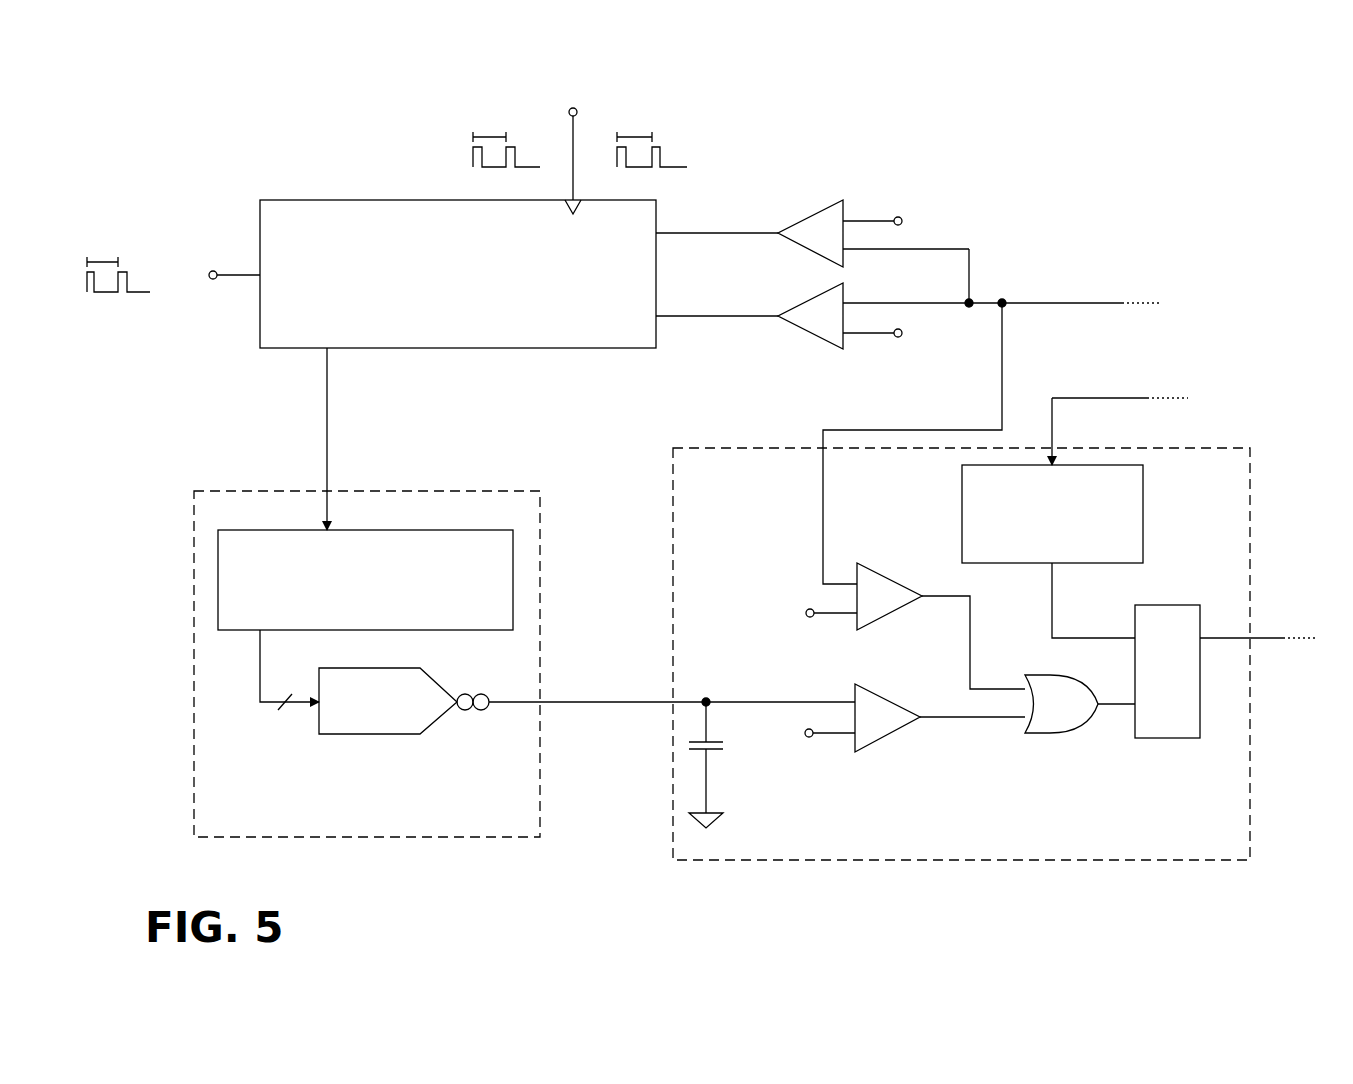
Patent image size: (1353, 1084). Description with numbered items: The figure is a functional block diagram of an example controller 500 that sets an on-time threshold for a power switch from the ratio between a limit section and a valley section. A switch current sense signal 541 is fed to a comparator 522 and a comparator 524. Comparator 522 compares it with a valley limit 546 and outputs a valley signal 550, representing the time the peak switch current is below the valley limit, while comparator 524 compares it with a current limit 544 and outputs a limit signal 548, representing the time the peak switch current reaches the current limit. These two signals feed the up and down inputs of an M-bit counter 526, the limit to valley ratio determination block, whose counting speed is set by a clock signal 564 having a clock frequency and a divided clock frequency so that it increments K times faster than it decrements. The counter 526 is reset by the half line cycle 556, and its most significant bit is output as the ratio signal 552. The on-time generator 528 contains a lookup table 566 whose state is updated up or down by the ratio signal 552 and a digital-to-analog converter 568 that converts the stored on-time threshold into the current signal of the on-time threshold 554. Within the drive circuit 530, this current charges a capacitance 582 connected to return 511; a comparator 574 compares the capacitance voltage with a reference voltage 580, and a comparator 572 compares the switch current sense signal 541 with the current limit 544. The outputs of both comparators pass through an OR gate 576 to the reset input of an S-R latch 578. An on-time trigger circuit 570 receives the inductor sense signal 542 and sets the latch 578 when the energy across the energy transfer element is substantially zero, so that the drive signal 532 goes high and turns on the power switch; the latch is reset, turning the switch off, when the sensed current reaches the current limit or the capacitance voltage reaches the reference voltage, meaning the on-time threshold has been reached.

The controller 500 is at (1240, 109).
The counter 526 is at (285, 196).
The half line cycle 556 is at (200, 248).
The clock signal 564 is at (480, 78).
The valley signal 550 is at (738, 205).
The comparator 522 is at (820, 200).
The valley limit 546 is at (1010, 220).
The switch current sense signal 541 is at (1195, 258).
The inductor sense signal 542 is at (1252, 355).
The limit signal 548 is at (720, 336).
The comparator 524 is at (830, 352).
The current limit 544 is at (920, 352).
The ratio signal 552 is at (336, 405).
The on-time generator 528 is at (190, 496).
The lookup table 566 is at (522, 575).
The digital-to-analog converter 568 is at (393, 736).
The on-time threshold 554 is at (610, 718).
The capacitance 582 is at (690, 765).
The return 511 is at (725, 825).
The reference voltage 580 is at (790, 755).
The on-time trigger circuit 570 is at (1150, 490).
The comparator 572 is at (925, 556).
The comparator 574 is at (910, 666).
The OR gate 576 is at (1042, 668).
The S-R latch 578 is at (1195, 582).
The drive signal 532 is at (1290, 602).
The drive circuit 530 is at (1086, 868).